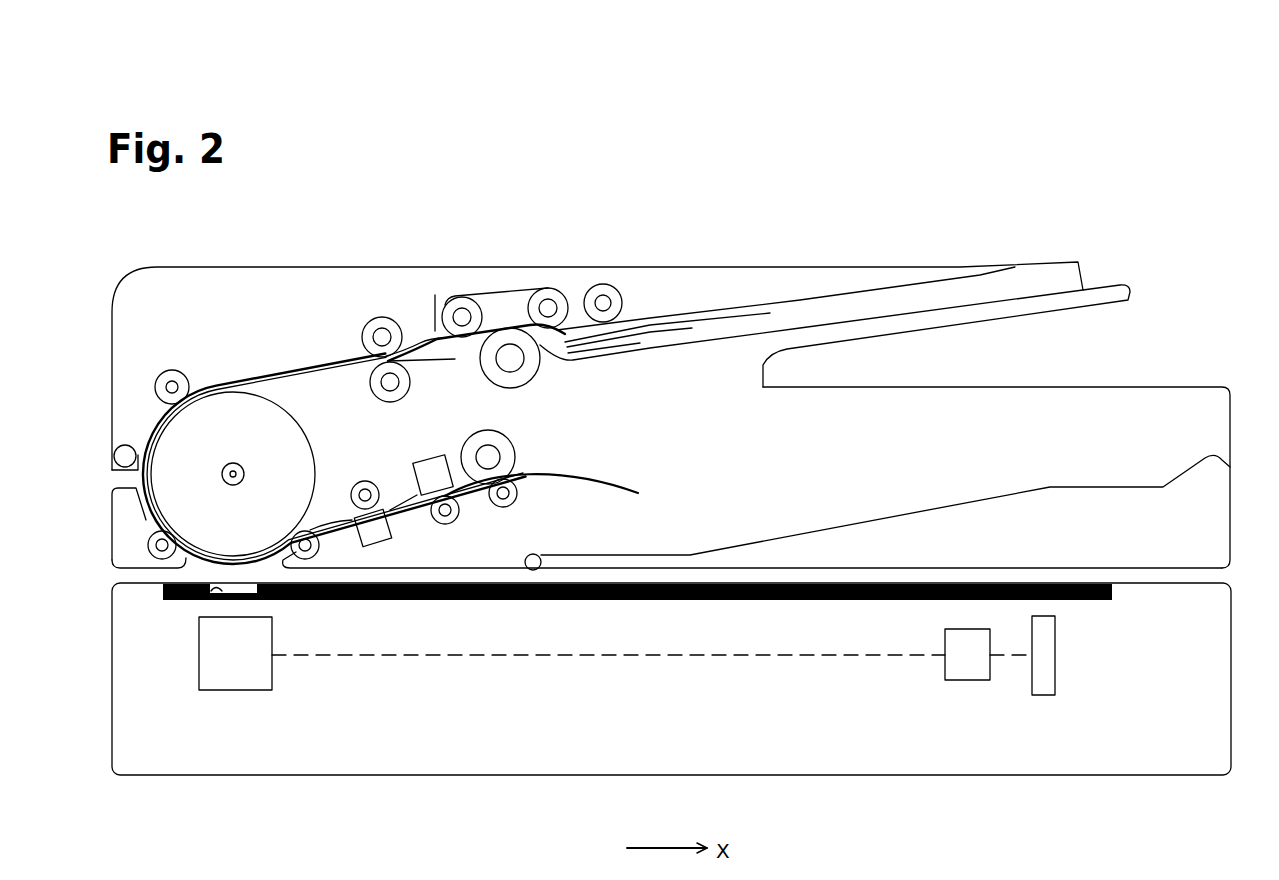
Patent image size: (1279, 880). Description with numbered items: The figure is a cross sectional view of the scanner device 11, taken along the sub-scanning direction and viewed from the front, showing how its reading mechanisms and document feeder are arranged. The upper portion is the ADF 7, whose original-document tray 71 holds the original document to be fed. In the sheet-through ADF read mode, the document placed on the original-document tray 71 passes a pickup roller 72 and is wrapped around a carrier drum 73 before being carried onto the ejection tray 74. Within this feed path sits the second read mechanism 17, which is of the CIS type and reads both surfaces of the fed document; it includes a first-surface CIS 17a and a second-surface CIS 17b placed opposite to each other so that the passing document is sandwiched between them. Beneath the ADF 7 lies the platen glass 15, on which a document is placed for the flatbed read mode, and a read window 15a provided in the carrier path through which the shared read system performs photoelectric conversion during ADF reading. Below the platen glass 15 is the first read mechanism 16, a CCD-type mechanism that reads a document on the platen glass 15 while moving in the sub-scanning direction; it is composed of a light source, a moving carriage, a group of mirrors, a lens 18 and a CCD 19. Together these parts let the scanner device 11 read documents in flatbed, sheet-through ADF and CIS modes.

The ADF 7 is at (292, 313).
The scanner device 11 is at (1185, 132).
The platen glass 15 is at (1092, 601).
The read window 15a is at (221, 591).
The first read mechanism 16 is at (293, 708).
The second read mechanism 17 is at (418, 512).
The first-surface CIS 17a is at (388, 538).
The second-surface CIS 17b is at (425, 493).
The lens 18 is at (967, 681).
The CCD 19 is at (1040, 695).
The original-document tray 71 is at (935, 323).
The pickup roller 72 is at (556, 308).
The carrier drum 73 is at (302, 427).
The ejection tray 74 is at (850, 533).